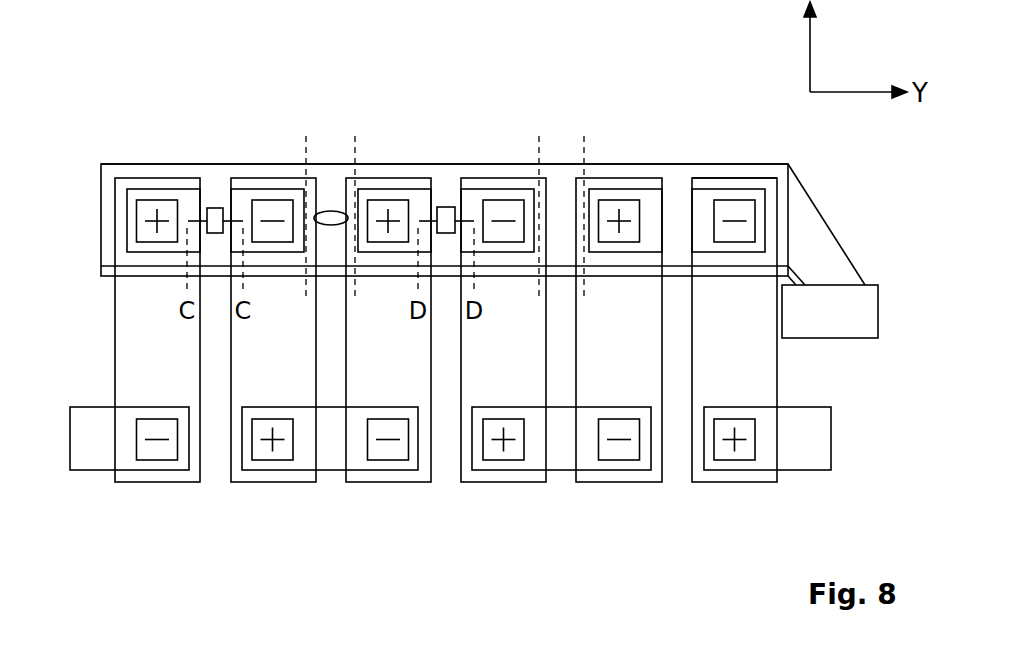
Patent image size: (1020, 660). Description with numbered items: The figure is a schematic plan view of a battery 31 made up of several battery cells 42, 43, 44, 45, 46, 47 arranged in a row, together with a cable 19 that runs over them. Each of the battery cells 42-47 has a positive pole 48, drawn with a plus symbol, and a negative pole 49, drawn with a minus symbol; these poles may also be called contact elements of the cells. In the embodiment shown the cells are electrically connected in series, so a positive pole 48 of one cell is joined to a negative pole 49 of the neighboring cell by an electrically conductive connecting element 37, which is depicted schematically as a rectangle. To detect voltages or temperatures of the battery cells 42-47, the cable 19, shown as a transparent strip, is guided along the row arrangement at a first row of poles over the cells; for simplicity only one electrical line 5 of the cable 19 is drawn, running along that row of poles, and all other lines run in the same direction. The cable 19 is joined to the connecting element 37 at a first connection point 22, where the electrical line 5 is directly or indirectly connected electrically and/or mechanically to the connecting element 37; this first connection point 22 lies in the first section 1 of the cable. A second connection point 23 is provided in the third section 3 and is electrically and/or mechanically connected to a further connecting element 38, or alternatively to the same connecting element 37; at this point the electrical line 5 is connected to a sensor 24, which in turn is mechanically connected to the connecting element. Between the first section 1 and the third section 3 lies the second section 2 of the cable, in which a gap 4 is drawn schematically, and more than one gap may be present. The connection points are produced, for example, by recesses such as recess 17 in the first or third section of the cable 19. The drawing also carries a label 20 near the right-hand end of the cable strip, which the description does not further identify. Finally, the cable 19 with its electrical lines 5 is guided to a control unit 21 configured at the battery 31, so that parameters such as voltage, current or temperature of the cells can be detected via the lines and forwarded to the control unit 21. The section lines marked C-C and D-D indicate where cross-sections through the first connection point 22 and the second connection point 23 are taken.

The first section 1 is at (239, 150).
The second section 2 is at (329, 150).
The third section 3 is at (444, 152).
The gap 4 is at (332, 211).
The electrical line 5 is at (106, 277).
The recess 17 is at (761, 178).
The cable 19 is at (108, 199).
The housing 20 is at (684, 156).
The control unit 21 is at (866, 321).
The first connection point 22 is at (215, 208).
The second connection point 23 is at (443, 206).
The sensor 24 is at (447, 207).
The battery 31 is at (682, 503).
The connecting element 37 is at (130, 248).
The further connecting element 38 is at (455, 220).
The battery cell 42 is at (157, 330).
The battery cell 43 is at (273, 330).
The battery cell 44 is at (388, 330).
The battery cell 45 is at (503, 330).
The battery cell 46 is at (619, 330).
The battery cell 47 is at (734, 330).
The positive pole 48 is at (147, 204).
The negative pole 49 is at (277, 204).